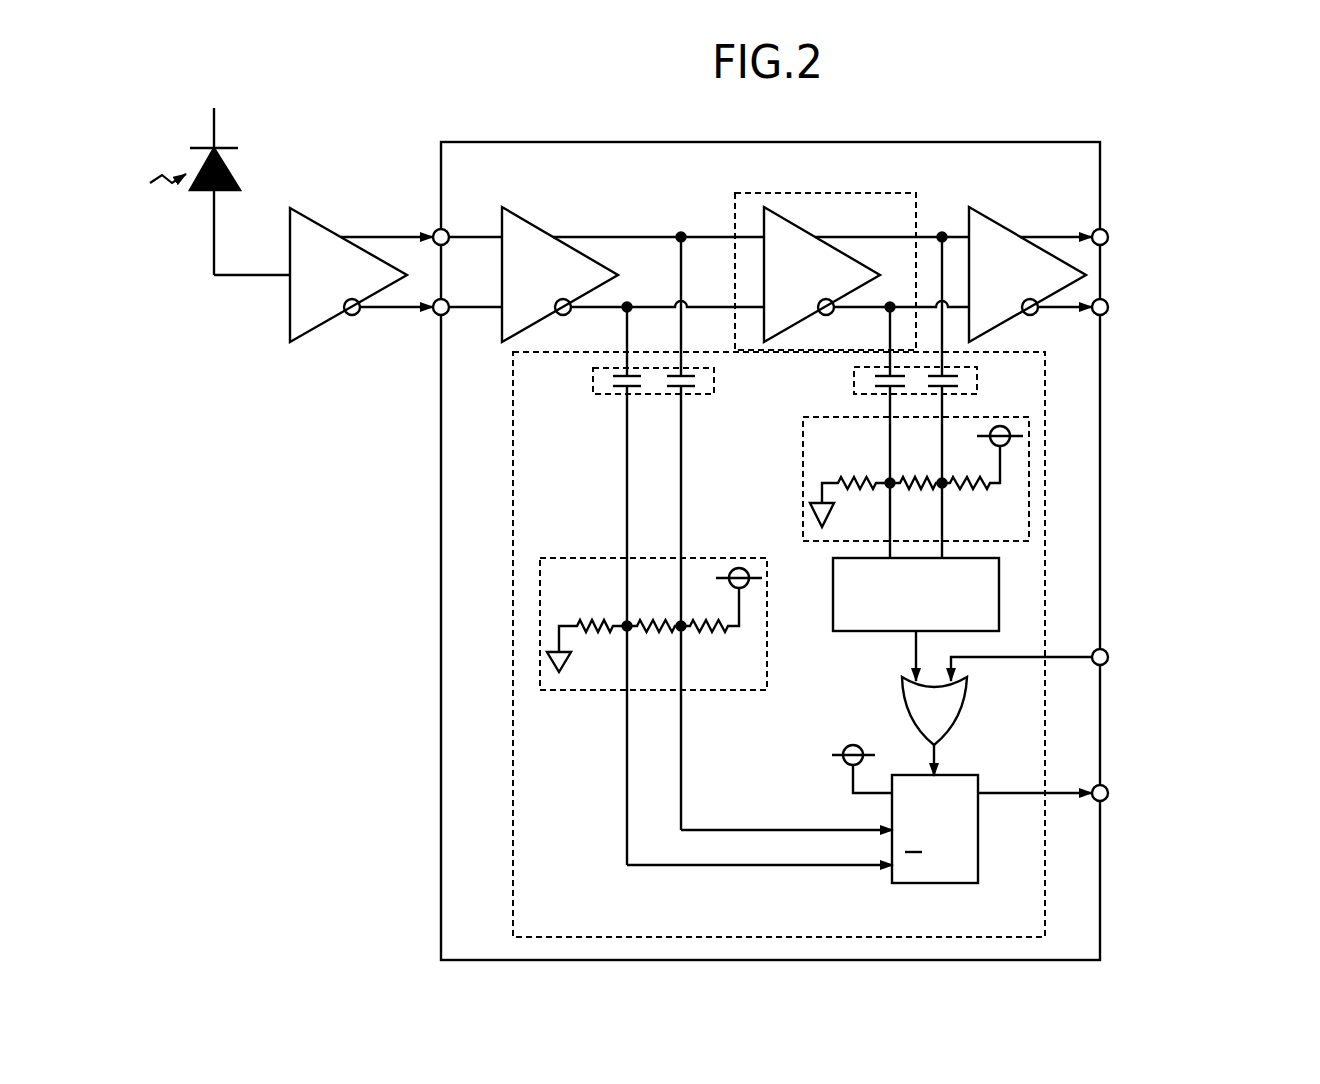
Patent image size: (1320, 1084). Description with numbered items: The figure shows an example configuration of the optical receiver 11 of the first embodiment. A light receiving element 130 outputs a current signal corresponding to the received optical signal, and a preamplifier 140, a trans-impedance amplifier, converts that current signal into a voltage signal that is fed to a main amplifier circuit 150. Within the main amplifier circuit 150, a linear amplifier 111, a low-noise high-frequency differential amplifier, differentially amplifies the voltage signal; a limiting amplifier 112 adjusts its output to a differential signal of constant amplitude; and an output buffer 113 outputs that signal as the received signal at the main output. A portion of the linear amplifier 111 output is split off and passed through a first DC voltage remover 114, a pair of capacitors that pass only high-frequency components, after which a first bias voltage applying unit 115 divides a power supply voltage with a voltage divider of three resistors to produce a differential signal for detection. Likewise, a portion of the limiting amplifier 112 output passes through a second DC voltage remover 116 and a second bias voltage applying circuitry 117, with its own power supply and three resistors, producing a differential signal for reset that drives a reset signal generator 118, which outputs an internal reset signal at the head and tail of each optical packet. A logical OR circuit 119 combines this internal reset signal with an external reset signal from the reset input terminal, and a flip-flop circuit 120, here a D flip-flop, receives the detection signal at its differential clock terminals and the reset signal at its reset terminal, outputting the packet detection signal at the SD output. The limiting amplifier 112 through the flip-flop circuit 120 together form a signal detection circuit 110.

The optical receiver 11 is at (1072, 124).
The signal detection circuit 110 is at (513, 862).
The linear amplifier 111 is at (539, 230).
The limiting amplifier 112 is at (802, 230).
The output buffer 113 is at (1004, 230).
The first DC voltage remover 114 is at (697, 396).
The first bias voltage applying unit 115 is at (706, 558).
The second DC voltage remover 116 is at (853, 379).
The second bias voltage applying circuitry 117 is at (803, 452).
The reset signal generator 118 is at (876, 633).
The logical OR circuit 119 is at (902, 700).
The flip-flop circuit 120 is at (958, 884).
The light receiving element 130 is at (224, 148).
The preamplifier 140 is at (322, 225).
The main amplifier circuit 150 is at (985, 142).